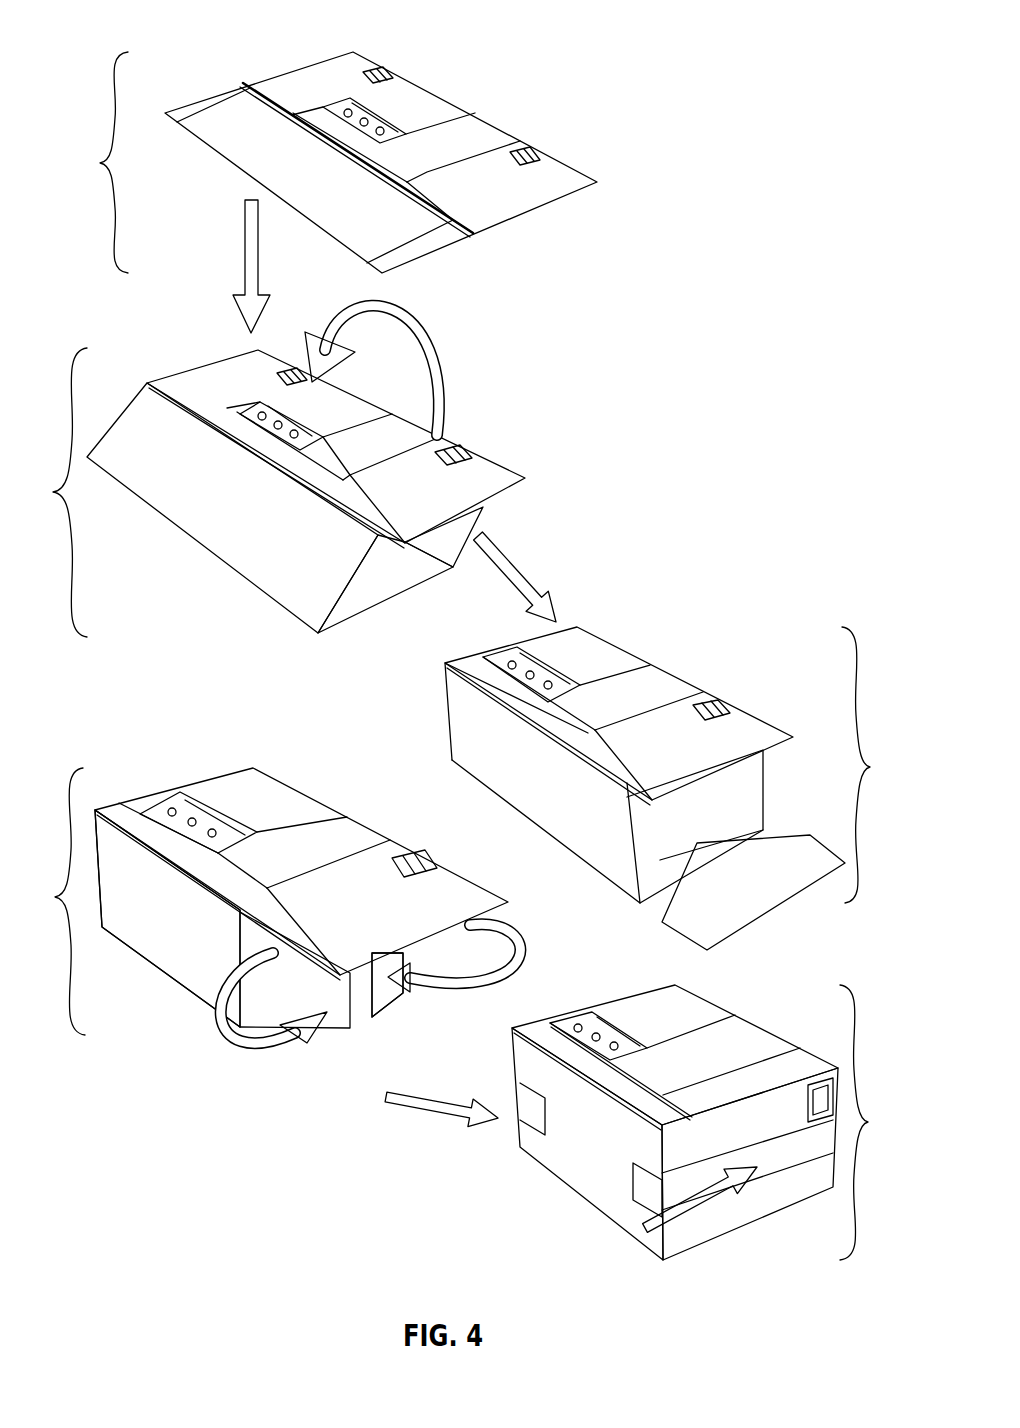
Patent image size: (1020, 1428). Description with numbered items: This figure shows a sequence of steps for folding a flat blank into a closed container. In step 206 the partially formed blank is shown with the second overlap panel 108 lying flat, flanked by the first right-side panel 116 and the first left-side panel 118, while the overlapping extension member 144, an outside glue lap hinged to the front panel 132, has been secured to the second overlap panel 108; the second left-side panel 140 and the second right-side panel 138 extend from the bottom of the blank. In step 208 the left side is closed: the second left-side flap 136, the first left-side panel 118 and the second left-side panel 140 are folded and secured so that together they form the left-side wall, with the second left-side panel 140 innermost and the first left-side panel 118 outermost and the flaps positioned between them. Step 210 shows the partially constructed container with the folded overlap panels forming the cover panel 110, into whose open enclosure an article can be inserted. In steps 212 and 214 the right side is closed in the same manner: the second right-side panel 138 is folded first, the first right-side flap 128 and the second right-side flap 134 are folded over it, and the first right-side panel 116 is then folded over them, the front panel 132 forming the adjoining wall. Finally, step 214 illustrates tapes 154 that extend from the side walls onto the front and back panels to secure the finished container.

The second overlap panel 108 is at (443, 118).
The cover panel 110 is at (628, 702).
The first right-side panel 116 is at (543, 182).
The first left-side panel 118 is at (326, 80).
The first right-side flap 128 is at (380, 993).
The front panel 132 is at (187, 960).
The second right-side flap 134 is at (340, 557).
The second left-side flap 136 is at (173, 433).
The second right-side panel 138 is at (410, 263).
The second left-side panel 140 is at (182, 110).
The overlapping extension member 144 is at (367, 150).
The tape 154 is at (533, 1112).
The step 206 is at (91, 162).
The step 208 is at (46, 492).
The step 210 is at (882, 765).
The step 212 is at (45, 901).
The step 214 is at (881, 1122).